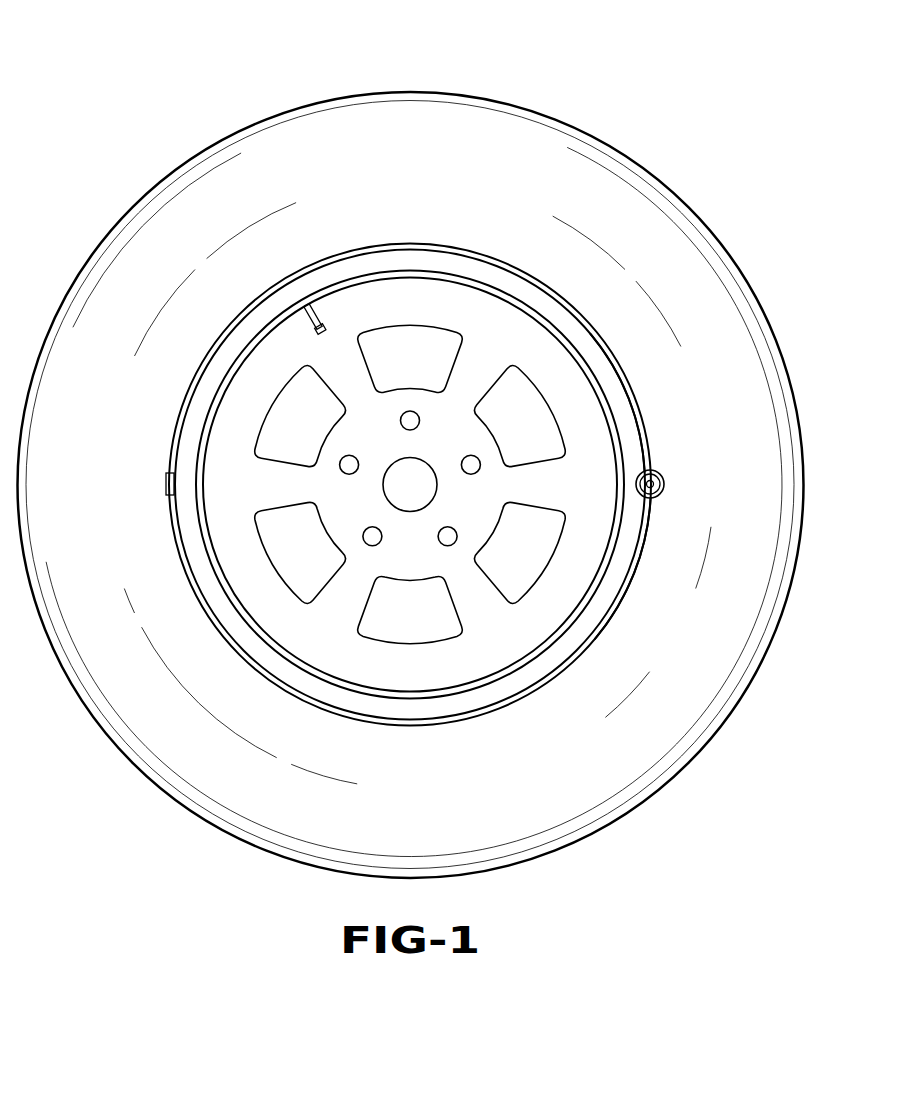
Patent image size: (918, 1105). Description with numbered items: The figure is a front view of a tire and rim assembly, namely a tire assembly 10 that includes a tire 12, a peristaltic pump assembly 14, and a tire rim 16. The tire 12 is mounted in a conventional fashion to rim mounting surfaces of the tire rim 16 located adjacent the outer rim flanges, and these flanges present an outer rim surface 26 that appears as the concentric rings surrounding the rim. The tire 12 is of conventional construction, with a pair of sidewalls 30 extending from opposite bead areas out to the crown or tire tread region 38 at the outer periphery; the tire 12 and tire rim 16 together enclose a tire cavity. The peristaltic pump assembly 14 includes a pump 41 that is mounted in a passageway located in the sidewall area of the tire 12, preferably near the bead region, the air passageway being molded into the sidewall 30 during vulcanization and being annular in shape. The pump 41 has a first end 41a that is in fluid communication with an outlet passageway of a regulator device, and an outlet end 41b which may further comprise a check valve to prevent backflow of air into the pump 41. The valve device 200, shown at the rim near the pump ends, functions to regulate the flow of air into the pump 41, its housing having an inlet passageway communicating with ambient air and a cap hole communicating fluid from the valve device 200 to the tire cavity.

The tire assembly 10 is at (158, 109).
The tire 12 is at (164, 746).
The peristaltic pump assembly 14 is at (368, 721).
The tire rim 16 is at (478, 357).
The outer rim surface 26 is at (569, 302).
The sidewall 30 is at (683, 235).
The tire tread region 38 is at (622, 152).
The pump 41 is at (398, 242).
The first end 41a is at (654, 500).
The outlet end 41b is at (654, 467).
The valve device 200 is at (664, 499).